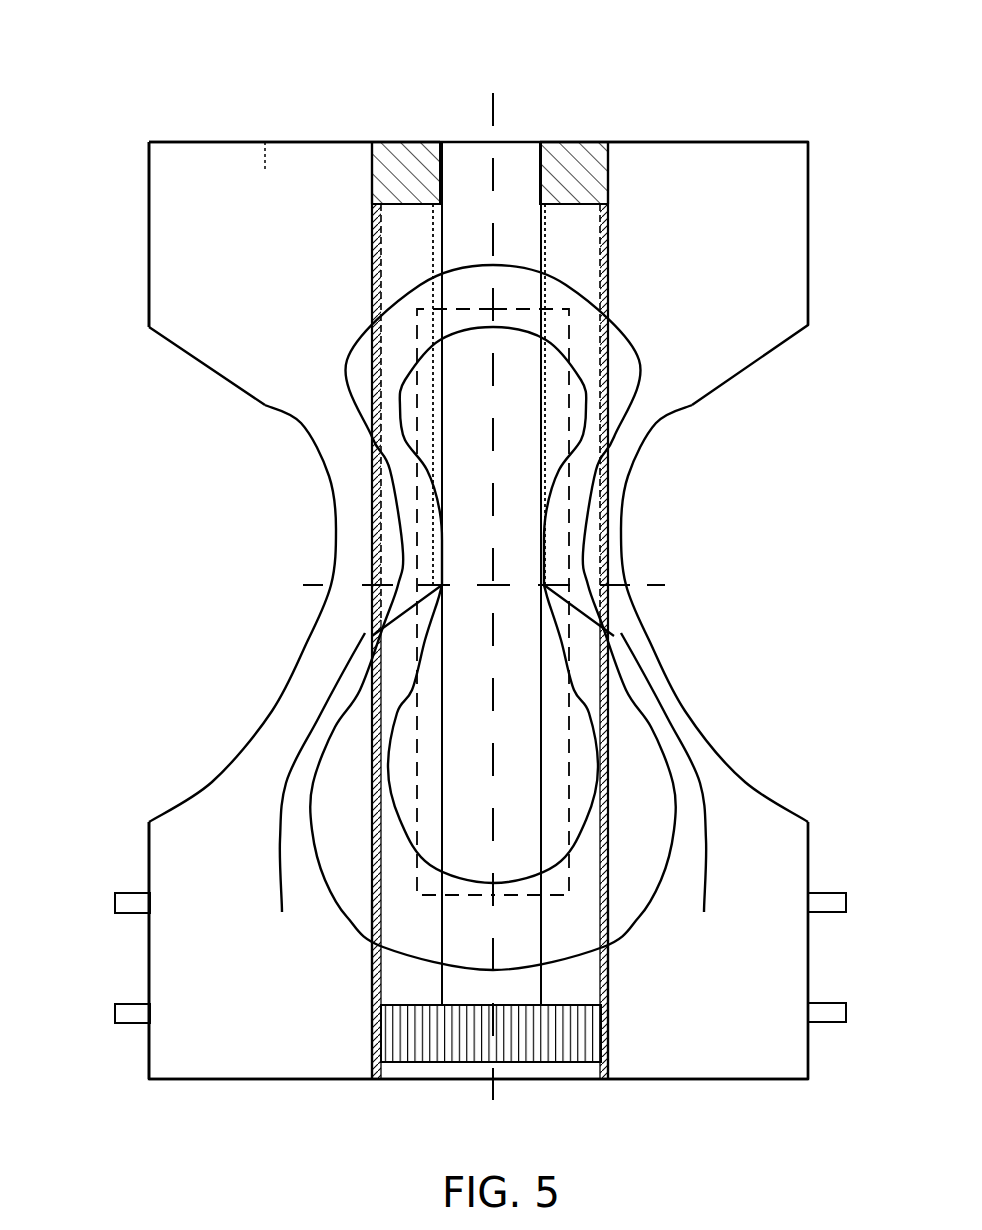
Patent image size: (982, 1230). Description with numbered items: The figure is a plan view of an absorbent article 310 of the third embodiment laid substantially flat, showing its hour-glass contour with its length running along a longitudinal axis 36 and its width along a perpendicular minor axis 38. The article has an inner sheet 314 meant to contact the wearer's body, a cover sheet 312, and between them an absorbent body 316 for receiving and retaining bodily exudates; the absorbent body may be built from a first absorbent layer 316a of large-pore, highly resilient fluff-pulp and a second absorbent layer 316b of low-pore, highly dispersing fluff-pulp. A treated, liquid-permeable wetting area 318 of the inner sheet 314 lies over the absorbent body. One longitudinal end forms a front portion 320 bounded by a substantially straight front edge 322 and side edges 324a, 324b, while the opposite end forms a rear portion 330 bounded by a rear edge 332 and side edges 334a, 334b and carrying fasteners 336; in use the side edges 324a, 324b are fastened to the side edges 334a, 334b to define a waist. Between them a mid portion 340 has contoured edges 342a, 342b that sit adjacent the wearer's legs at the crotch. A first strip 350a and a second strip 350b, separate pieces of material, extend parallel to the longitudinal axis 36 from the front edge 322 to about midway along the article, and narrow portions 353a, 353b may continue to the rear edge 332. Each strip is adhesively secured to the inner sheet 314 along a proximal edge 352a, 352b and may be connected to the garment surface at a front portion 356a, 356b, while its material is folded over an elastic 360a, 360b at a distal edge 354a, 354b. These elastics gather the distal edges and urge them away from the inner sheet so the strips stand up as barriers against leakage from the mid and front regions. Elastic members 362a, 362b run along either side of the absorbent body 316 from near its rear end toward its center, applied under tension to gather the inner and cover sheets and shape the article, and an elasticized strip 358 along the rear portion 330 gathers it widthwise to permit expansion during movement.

The absorbent article 310 is at (172, 92).
The cover sheet 312 is at (266, 142).
The inner sheet 314 is at (215, 208).
The absorbent body 316 is at (622, 370).
The first absorbent layer 316a is at (425, 787).
The second absorbent layer 316b is at (632, 325).
The wetting area 318 is at (425, 308).
The front portion 320 is at (130, 241).
The front edge 322 is at (713, 142).
The side edge 324a is at (149, 164).
The side edge 324b is at (810, 262).
The rear portion 330 is at (124, 951).
The rear edge 332 is at (707, 1080).
The side edge 334a is at (149, 850).
The side edge 334b is at (810, 825).
The fasteners 336 is at (115, 903).
The longitudinal axis 36 is at (492, 110).
The minor axis 38 is at (655, 590).
The mid portion 340 is at (288, 540).
The contoured edge 342a is at (255, 397).
The contoured edge 342b is at (718, 384).
The first strip 350a is at (409, 142).
The second strip 350b is at (572, 142).
The proximal edge 352a is at (373, 258).
The proximal edge 352b is at (610, 273).
The narrow portion 353a is at (372, 958).
The narrow portion 353b is at (610, 962).
The distal edge 354a is at (442, 265).
The distal edge 354b is at (540, 762).
The front portion 356a is at (372, 176).
The front portion 356b is at (609, 176).
The elasticized strip 358 is at (381, 1030).
The elastic 360a is at (440, 215).
The elastic 360b is at (547, 261).
The elastic member 362a is at (277, 868).
The elastic member 362b is at (713, 867).